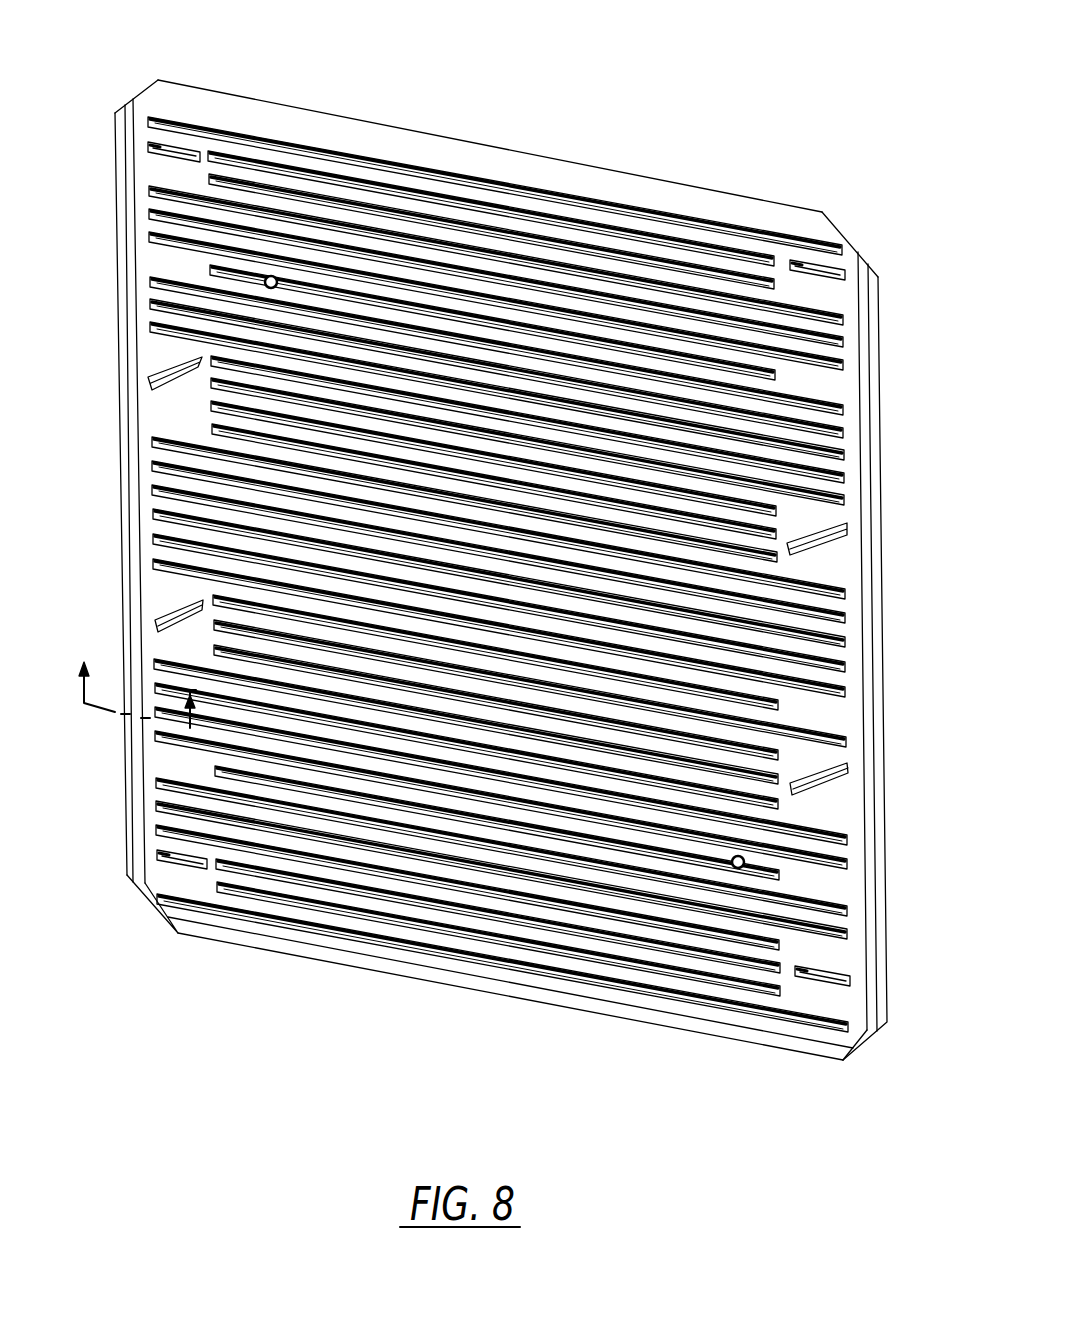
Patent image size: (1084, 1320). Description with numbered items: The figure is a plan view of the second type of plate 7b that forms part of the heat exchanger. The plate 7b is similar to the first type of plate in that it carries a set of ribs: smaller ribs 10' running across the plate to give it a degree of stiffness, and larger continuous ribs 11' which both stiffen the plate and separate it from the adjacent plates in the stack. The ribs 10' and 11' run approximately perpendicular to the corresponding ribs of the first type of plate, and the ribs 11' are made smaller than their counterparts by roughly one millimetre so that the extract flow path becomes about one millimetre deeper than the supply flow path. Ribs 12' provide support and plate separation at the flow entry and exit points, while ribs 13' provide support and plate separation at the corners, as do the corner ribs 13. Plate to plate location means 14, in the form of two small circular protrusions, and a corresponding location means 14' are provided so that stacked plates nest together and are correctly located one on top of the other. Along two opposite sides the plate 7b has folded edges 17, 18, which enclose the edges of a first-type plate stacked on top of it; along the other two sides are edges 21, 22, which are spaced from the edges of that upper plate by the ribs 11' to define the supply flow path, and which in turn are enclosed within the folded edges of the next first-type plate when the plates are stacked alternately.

The ribs 10' is at (498, 595).
The ribs 11' is at (498, 558).
The ribs 12' is at (501, 578).
The ribs 13' is at (502, 547).
The mounting hole 14' is at (169, 259).
The plate to plate location means 14 is at (836, 887).
The folded edge 17 is at (127, 470).
The folded edge 18 is at (885, 456).
The edge 21 is at (584, 165).
The edge 22 is at (652, 1026).
The plate 7b is at (885, 718).
The ribs 13 is at (134, 723).